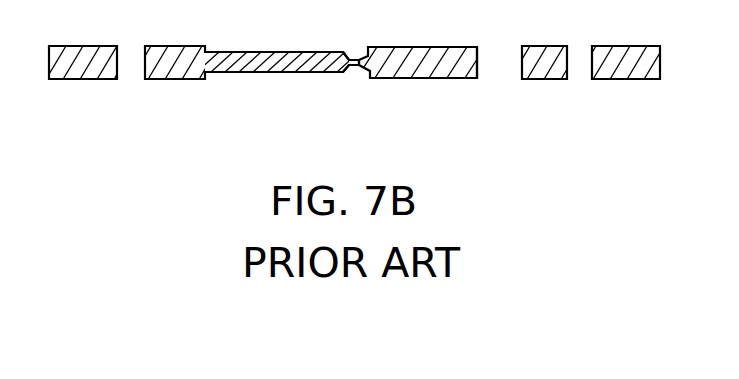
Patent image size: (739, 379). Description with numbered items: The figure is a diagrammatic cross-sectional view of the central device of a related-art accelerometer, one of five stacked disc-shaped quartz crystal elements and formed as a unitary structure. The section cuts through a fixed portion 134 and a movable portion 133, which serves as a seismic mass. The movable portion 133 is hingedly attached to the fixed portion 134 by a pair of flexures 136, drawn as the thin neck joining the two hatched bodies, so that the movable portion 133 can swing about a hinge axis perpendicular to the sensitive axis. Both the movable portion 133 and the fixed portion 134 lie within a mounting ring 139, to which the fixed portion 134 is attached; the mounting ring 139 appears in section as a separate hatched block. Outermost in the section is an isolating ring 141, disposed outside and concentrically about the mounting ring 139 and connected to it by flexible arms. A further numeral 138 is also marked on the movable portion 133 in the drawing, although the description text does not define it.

The movable portion 133 is at (437, 72).
The fixed portion 134 is at (236, 72).
The flexures 136 is at (357, 66).
The head portion 138 is at (411, 75).
The mounting ring 139 is at (540, 73).
The isolating ring 141 is at (83, 73).